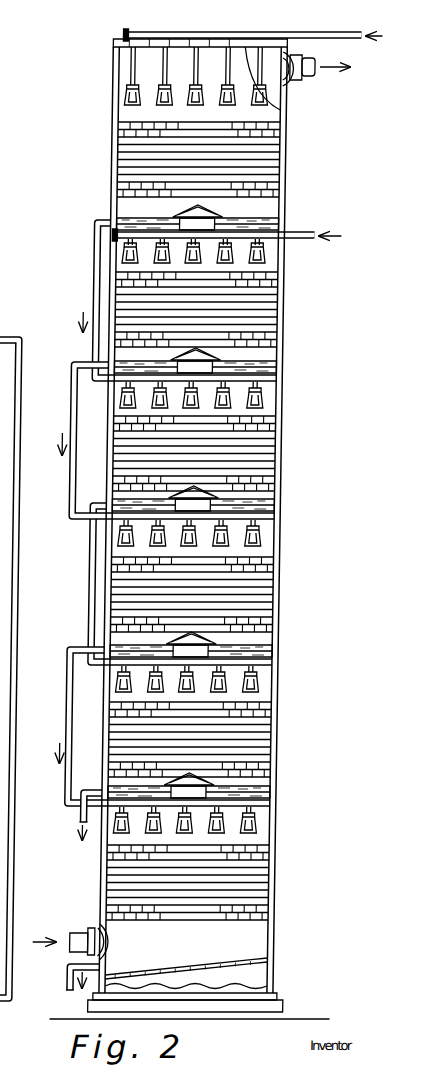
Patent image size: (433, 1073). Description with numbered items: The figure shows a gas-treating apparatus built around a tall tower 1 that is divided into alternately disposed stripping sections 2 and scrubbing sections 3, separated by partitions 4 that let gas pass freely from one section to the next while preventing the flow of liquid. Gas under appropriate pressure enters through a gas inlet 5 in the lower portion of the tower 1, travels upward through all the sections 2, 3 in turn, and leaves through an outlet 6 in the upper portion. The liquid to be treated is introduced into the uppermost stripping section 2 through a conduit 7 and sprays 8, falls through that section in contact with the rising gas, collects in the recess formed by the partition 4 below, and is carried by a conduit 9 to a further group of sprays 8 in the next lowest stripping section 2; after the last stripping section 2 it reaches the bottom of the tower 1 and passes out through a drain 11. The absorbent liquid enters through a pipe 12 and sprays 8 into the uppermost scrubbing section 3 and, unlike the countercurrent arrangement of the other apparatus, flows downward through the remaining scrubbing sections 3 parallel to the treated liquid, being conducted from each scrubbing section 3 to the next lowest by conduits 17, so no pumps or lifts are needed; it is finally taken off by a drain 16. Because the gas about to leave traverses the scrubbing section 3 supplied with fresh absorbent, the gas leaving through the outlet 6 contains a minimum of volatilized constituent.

The tower 1 is at (347, 479).
The stripping section 2 is at (284, 300).
The scrubbing section 3 is at (285, 155).
The partition 4 is at (289, 214).
The gas inlet 5 is at (100, 927).
The outlet 6 is at (302, 79).
The conduit 7 is at (304, 239).
The sprays 8 is at (126, 93).
The conduit 9 is at (77, 413).
The drain 11 is at (81, 966).
The pipe 12 is at (362, 40).
The drain 16 is at (92, 812).
The conduit 17 is at (96, 222).